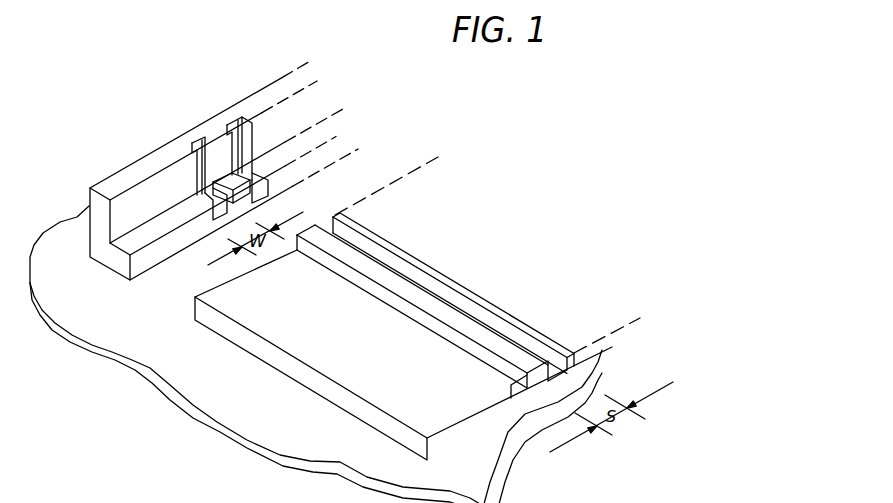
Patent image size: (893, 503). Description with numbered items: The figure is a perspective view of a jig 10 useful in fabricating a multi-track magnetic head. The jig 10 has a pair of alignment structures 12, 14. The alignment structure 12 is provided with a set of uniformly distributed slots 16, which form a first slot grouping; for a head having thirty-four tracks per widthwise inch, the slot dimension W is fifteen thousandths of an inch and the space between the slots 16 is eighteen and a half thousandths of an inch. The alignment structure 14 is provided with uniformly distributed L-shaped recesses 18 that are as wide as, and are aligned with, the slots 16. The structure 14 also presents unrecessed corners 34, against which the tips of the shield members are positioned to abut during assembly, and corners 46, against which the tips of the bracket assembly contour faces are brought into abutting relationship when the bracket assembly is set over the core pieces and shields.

The jig 10 is at (130, 347).
The alignment structure 12 is at (292, 370).
The alignment structure 14 is at (216, 181).
The slots 16 is at (515, 403).
The L-shaped recesses 18 is at (243, 130).
The unrecessed corners 34 is at (222, 178).
The corners 46 is at (131, 233).